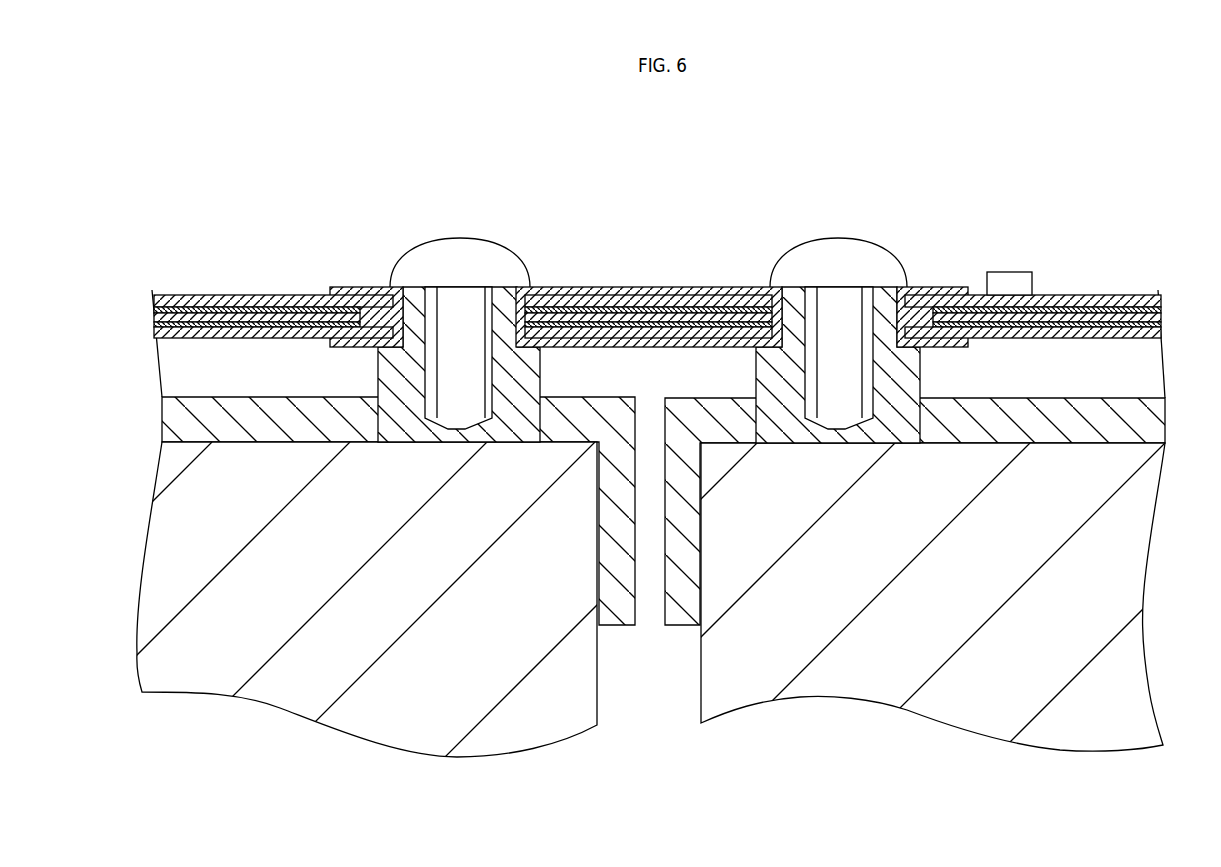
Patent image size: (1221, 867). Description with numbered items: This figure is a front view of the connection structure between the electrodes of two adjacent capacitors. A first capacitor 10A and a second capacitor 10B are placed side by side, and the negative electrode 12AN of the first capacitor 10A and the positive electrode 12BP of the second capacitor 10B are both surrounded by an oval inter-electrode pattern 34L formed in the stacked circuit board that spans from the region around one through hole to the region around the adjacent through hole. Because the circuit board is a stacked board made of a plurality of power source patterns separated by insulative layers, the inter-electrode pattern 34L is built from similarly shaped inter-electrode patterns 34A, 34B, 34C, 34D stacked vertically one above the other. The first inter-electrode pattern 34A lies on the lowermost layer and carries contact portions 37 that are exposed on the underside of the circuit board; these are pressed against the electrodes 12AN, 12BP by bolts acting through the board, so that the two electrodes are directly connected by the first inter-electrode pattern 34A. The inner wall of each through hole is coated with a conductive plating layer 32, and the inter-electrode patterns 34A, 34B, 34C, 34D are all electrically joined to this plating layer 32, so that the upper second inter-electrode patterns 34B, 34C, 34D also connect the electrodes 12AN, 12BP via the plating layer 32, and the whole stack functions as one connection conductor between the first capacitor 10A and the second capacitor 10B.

The first capacitor 10A is at (597, 676).
The second capacitor 10B is at (700, 680).
The negative electrode 12AN is at (372, 376).
The positive electrode 12BP is at (920, 380).
The plating layer 32 is at (501, 306).
The contact portion 37 is at (533, 354).
The inter-electrode pattern 34L is at (654, 271).
The first inter-electrode pattern 34A is at (684, 353).
The second inter-electrode pattern 34B is at (652, 328).
The second inter-electrode pattern 34C is at (620, 314).
The second inter-electrode pattern 34D is at (571, 298).